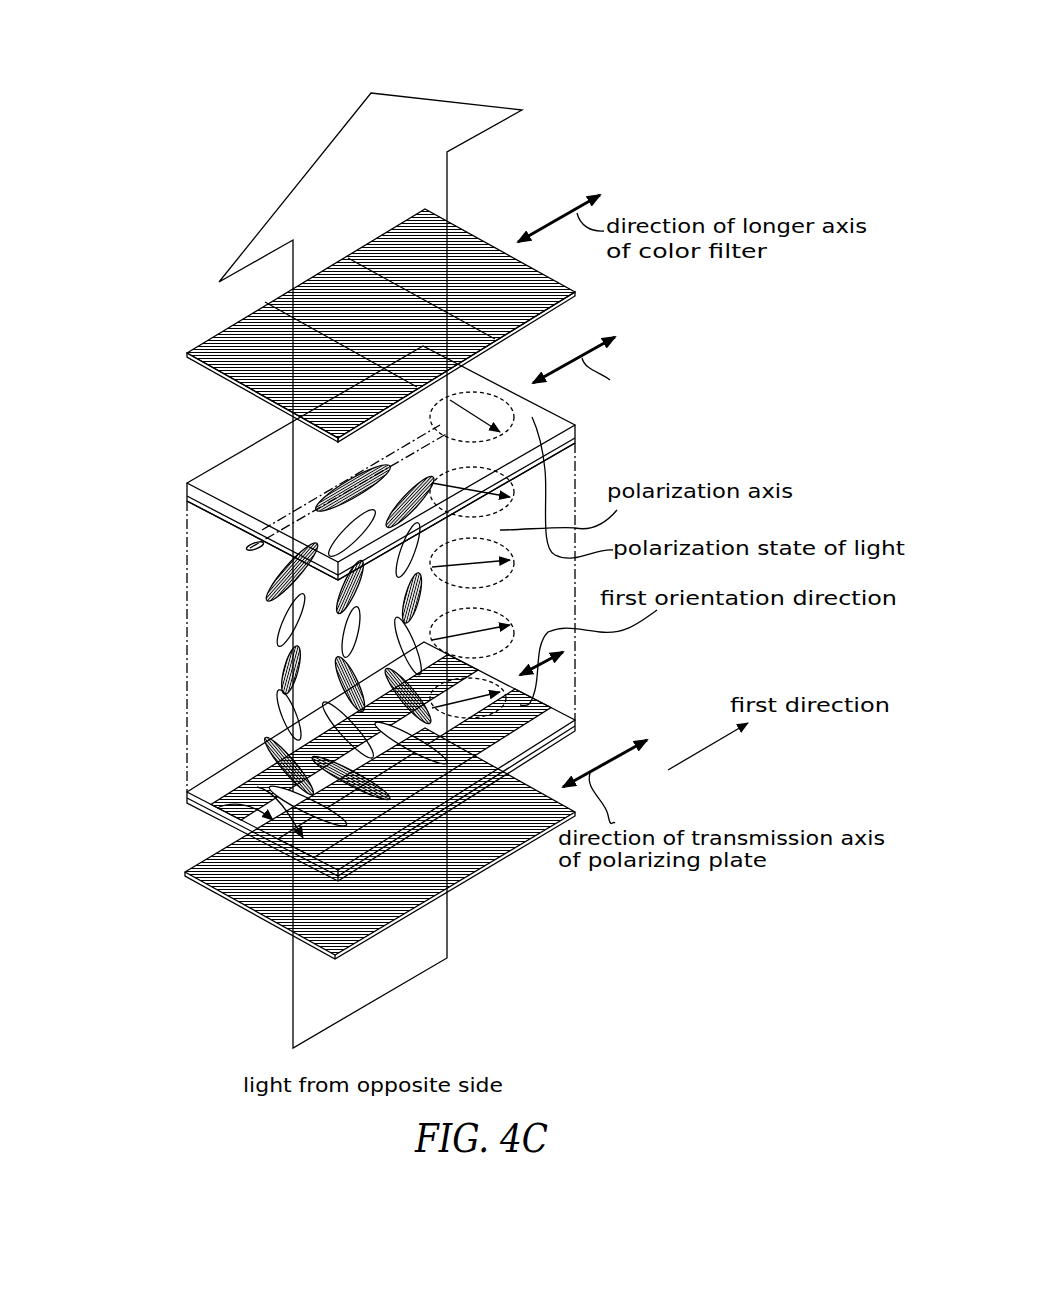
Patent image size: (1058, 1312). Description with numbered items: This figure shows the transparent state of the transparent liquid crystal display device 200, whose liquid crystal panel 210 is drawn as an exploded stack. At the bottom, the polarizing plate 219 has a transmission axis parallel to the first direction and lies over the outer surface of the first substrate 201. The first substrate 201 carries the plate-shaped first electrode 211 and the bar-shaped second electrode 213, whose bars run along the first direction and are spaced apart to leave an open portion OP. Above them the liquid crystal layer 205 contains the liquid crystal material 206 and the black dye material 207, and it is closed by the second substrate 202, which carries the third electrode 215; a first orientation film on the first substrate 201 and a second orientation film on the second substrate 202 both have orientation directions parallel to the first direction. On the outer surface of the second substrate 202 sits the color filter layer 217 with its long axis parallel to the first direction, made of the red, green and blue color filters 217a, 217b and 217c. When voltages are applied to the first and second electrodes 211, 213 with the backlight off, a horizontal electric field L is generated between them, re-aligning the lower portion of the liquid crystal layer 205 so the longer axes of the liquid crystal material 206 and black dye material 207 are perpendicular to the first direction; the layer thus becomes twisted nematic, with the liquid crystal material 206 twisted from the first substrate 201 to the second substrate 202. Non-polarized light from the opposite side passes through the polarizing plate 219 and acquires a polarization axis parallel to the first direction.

The transparent liquid crystal display device 200 is at (429, 34).
The color filter layer 217 is at (307, 190).
The red color filter 217a is at (240, 345).
The green color filter 217b is at (315, 290).
The blue color filter 217c is at (383, 247).
The liquid crystal panel 210 is at (627, 360).
The second substrate 202 is at (215, 481).
The third electrode 215 is at (185, 506).
The black dye material 207 is at (272, 573).
The liquid crystal material 206 is at (276, 616).
The liquid crystal layer 205 is at (222, 659).
The open portion OP is at (292, 691).
The second electrode 213 is at (254, 747).
The first electrode 211 is at (211, 777).
The first substrate 201 is at (211, 813).
The horizontal electric field L is at (240, 822).
The polarizing plate 219 is at (535, 840).